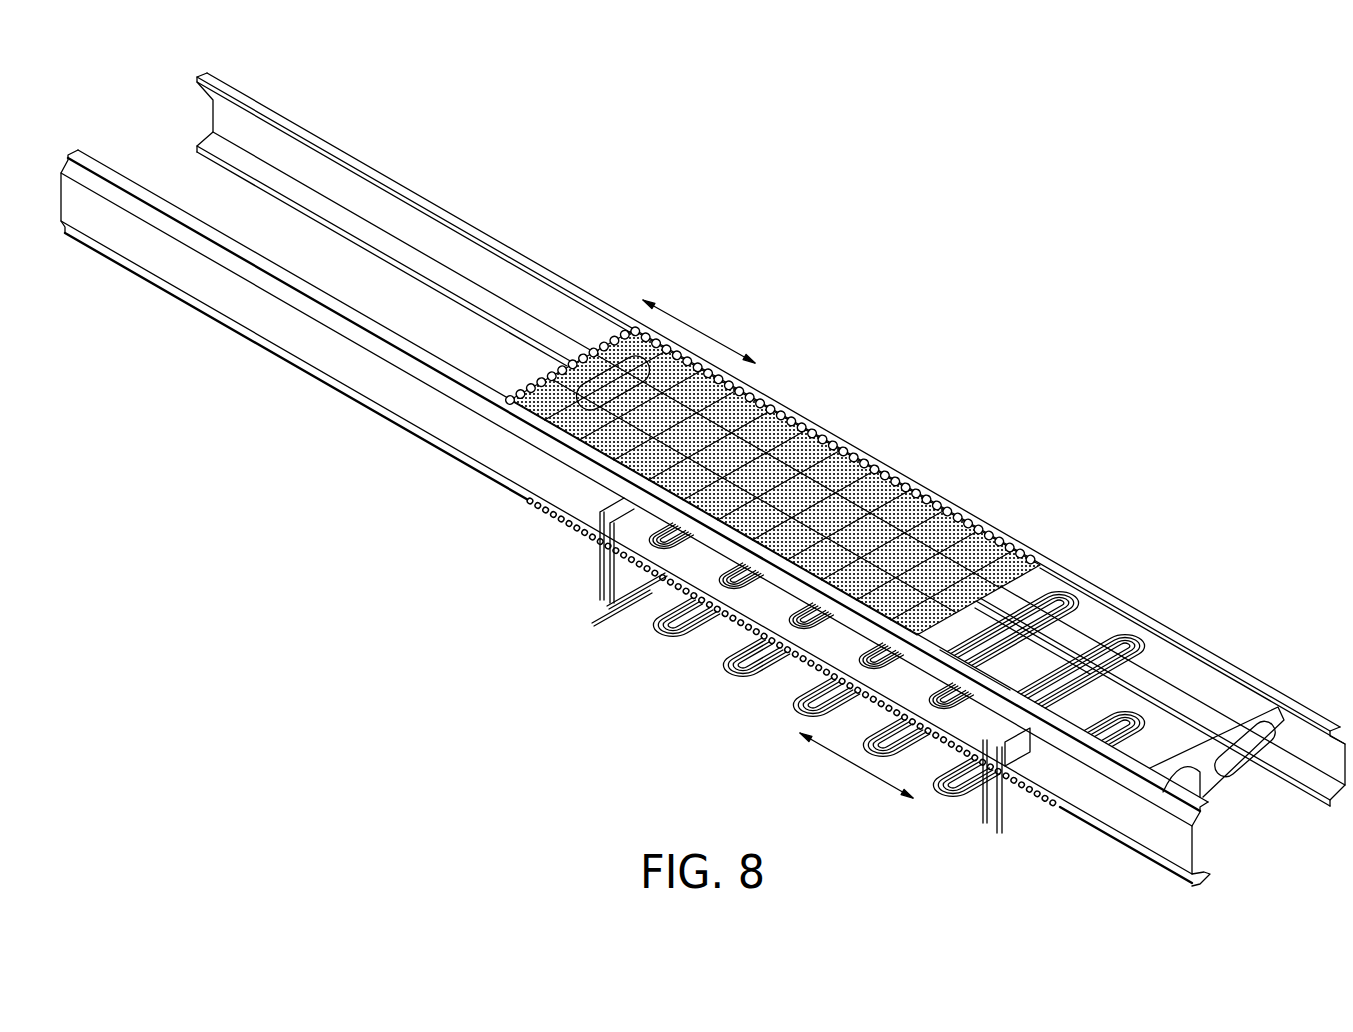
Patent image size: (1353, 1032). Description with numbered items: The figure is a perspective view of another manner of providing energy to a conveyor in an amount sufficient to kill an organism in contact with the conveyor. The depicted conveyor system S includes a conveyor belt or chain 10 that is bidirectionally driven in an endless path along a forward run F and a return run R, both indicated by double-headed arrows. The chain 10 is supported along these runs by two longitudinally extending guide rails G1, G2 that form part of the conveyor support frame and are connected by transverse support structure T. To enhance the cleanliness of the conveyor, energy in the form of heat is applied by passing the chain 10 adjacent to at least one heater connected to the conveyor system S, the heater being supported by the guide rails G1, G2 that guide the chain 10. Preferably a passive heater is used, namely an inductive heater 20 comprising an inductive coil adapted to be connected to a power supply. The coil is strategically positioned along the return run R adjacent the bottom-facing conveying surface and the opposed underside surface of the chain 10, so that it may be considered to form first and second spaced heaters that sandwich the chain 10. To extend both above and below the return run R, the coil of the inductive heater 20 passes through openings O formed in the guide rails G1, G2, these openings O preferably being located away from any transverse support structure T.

The chain 10 is at (925, 493).
The inductive heater 20 is at (727, 700).
The conveyor system S is at (765, 262).
The forward run F is at (703, 326).
The return run R is at (851, 774).
The openings O is at (517, 498).
The transverse support structure T is at (1212, 782).
The guide rail G1 is at (1193, 842).
The guide rail G2 is at (1332, 808).